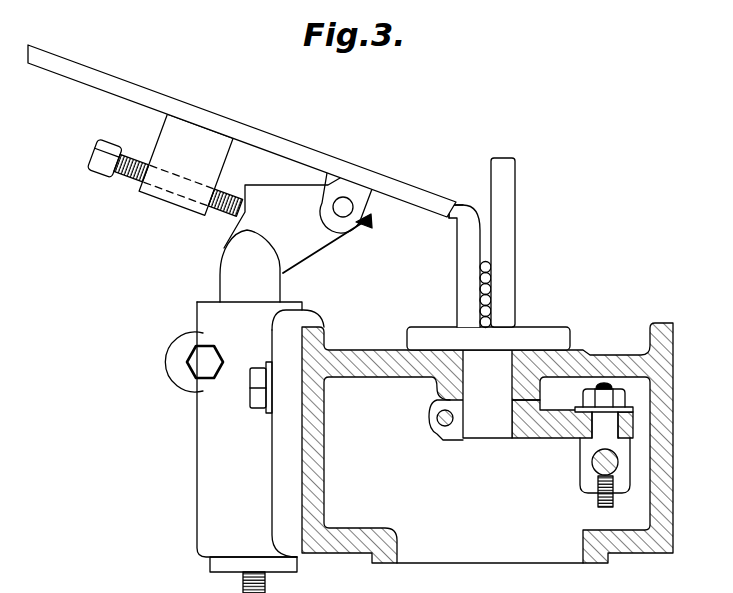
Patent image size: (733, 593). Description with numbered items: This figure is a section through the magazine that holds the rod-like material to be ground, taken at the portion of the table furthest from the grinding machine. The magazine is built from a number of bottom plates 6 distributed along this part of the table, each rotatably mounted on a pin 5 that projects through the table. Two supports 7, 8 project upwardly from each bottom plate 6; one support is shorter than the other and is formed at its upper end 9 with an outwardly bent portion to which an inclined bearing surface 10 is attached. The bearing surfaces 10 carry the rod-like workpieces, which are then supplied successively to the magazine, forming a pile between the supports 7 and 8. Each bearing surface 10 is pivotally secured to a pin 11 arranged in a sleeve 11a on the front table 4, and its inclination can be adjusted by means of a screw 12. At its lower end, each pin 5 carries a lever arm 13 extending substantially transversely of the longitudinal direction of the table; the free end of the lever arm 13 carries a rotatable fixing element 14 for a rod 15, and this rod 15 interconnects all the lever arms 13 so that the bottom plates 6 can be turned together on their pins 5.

The front table 4 is at (366, 362).
The pin 5 is at (478, 438).
The bottom plate 6 is at (555, 332).
The support 7 is at (461, 267).
The support 8 is at (511, 266).
The upper end 9 is at (449, 223).
The inclined bearing surface 10 is at (338, 165).
The pin 11 is at (219, 273).
The sleeve 11a is at (207, 441).
The screw 12 is at (104, 174).
The lever arm 13 is at (543, 437).
The rotatable fixing element 14 is at (586, 450).
The rod 15 is at (593, 475).